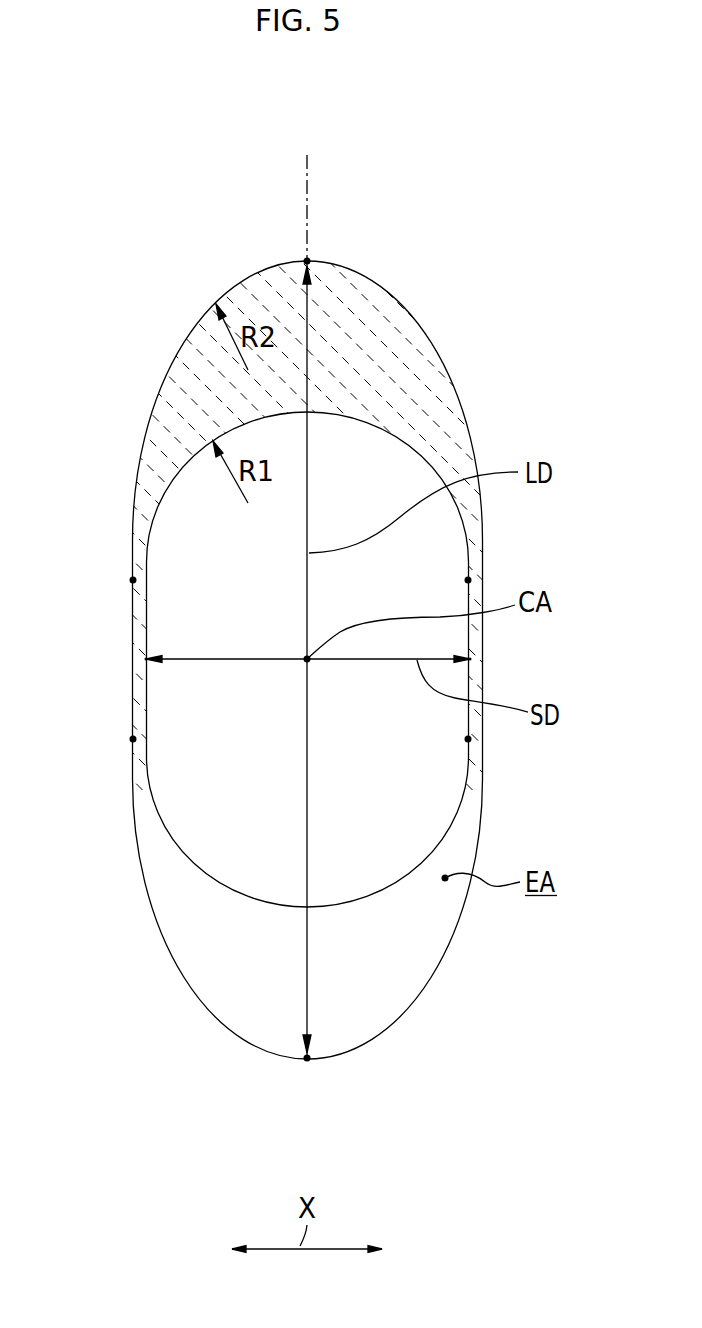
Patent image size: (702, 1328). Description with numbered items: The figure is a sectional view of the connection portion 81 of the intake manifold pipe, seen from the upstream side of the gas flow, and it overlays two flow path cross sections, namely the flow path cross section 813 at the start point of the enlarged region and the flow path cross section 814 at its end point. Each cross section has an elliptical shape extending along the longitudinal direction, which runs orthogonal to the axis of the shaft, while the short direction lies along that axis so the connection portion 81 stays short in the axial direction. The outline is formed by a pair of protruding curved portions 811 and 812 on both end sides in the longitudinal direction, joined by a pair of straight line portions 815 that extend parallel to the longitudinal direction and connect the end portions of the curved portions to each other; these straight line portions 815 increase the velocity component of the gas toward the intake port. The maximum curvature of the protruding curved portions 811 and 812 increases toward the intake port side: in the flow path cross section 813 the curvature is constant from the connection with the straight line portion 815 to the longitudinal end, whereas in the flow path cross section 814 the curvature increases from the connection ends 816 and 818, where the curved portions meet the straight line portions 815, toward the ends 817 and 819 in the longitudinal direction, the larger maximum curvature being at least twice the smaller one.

The connection portion 81 is at (499, 186).
The protruding curved portion 811 is at (388, 291).
The protruding curved portion 812 is at (380, 897).
The flow path cross section 813 is at (172, 849).
The flow path cross section 814 is at (181, 981).
The straight line portion 815 is at (147, 693).
The connection end 816 is at (133, 580).
The one end 817 is at (307, 261).
The connection end 818 is at (133, 739).
The one end 819 is at (307, 1058).